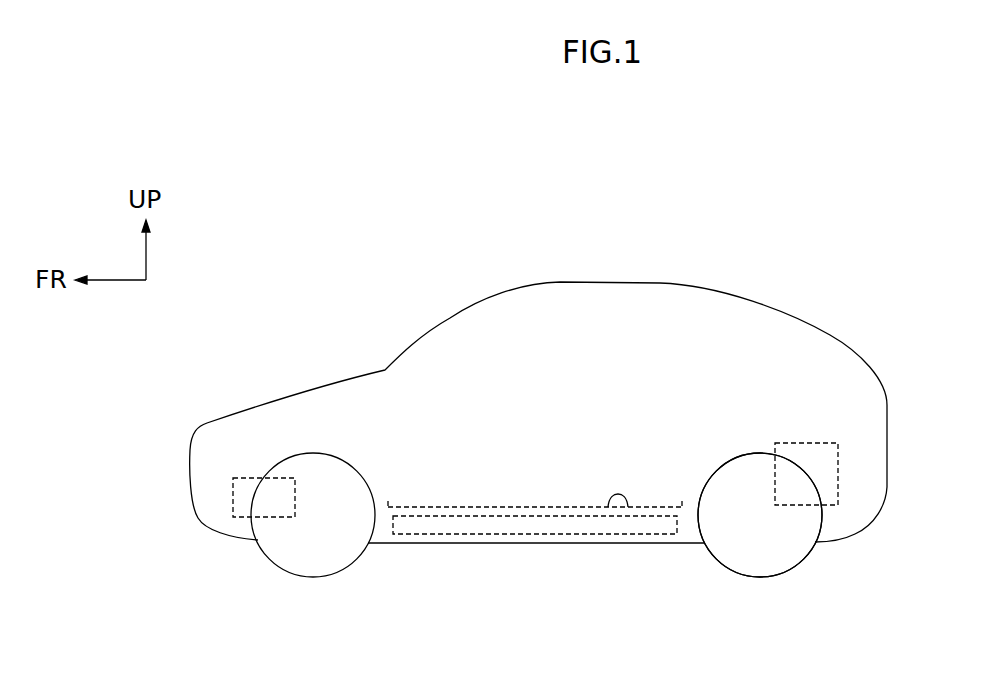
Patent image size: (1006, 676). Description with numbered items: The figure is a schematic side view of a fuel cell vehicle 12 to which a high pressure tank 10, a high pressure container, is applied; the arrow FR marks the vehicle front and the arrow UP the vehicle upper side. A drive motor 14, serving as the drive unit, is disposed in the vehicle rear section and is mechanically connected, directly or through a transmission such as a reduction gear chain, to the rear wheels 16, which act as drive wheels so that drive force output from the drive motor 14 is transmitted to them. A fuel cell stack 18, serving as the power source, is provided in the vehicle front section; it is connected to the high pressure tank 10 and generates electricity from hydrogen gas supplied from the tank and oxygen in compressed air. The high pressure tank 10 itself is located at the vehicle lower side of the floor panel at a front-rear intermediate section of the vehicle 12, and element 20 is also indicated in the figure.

The high pressure tank 10 is at (565, 552).
The fuel cell vehicle 12 is at (788, 259).
The drive motor 14 is at (838, 478).
The rear wheels 16 is at (810, 550).
The fuel cell stack 18 is at (232, 491).
The sensor 20 is at (622, 507).